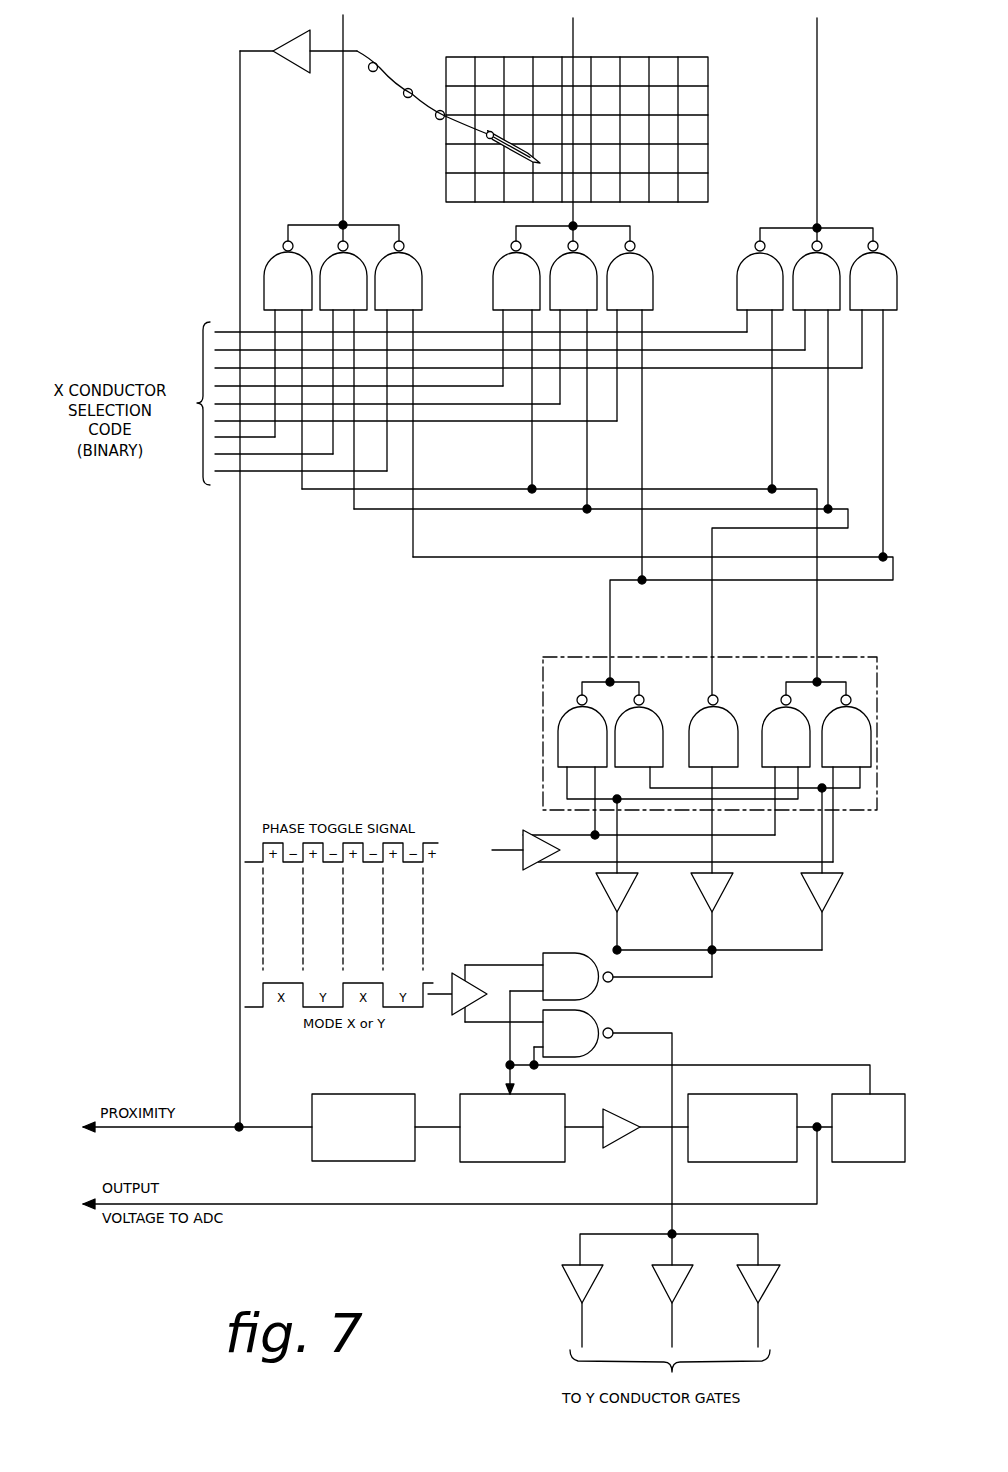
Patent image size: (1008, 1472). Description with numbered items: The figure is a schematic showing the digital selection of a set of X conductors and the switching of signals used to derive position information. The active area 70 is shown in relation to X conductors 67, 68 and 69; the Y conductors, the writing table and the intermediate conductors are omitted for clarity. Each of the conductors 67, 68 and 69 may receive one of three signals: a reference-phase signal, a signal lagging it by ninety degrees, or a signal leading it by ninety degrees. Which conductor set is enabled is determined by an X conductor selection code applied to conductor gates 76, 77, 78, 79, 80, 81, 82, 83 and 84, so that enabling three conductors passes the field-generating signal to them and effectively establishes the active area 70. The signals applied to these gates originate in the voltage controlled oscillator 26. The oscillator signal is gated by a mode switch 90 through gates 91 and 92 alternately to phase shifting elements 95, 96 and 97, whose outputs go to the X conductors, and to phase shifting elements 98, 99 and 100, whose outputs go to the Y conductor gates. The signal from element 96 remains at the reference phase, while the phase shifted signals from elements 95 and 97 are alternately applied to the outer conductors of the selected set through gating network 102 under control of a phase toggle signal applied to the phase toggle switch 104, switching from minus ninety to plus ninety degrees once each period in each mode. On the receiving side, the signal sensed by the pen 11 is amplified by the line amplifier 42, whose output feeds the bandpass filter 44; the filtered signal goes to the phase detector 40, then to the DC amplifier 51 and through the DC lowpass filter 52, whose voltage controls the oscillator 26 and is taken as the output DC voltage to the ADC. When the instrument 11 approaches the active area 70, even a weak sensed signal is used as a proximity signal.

The pen 11 is at (497, 130).
The voltage controlled oscillator 26 is at (880, 1162).
The phase detector 40 is at (468, 1162).
The line amplifier 42 is at (283, 36).
The bandpass filter 44 is at (312, 1147).
The DC amplifier 51 is at (618, 1148).
The DC lowpass filter 52 is at (748, 1162).
The X conductor 67 is at (343, 175).
The X conductor 68 is at (573, 212).
The X conductor 69 is at (817, 155).
The active area 70 is at (708, 72).
The conductor gate 76 is at (264, 262).
The conductor gate 77 is at (320, 260).
The conductor gate 78 is at (408, 258).
The conductor gate 79 is at (495, 260).
The conductor gate 80 is at (552, 258).
The conductor gate 81 is at (653, 276).
The conductor gate 82 is at (740, 260).
The conductor gate 83 is at (832, 260).
The conductor gate 84 is at (893, 266).
The mode switch 90 is at (455, 973).
The gate 91 is at (543, 960).
The gate 92 is at (603, 1020).
The phase shifting element 95 is at (597, 906).
The phase shifting element 96 is at (692, 906).
The phase shifting element 97 is at (803, 906).
The phase shifting element 98 is at (560, 1270).
The phase shifting element 99 is at (658, 1278).
The phase shifting element 100 is at (775, 1282).
The gating network 102 is at (543, 692).
The phase toggle switch 104 is at (523, 830).